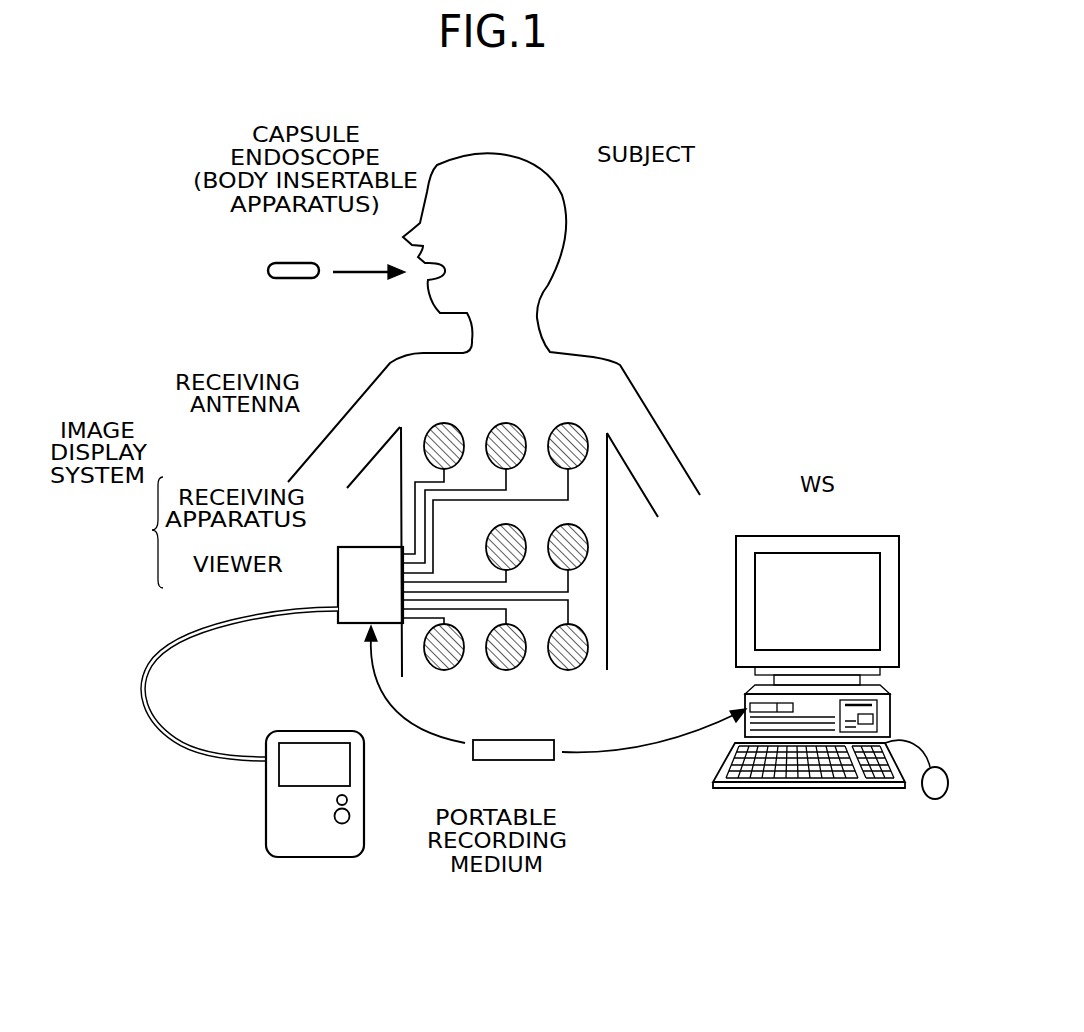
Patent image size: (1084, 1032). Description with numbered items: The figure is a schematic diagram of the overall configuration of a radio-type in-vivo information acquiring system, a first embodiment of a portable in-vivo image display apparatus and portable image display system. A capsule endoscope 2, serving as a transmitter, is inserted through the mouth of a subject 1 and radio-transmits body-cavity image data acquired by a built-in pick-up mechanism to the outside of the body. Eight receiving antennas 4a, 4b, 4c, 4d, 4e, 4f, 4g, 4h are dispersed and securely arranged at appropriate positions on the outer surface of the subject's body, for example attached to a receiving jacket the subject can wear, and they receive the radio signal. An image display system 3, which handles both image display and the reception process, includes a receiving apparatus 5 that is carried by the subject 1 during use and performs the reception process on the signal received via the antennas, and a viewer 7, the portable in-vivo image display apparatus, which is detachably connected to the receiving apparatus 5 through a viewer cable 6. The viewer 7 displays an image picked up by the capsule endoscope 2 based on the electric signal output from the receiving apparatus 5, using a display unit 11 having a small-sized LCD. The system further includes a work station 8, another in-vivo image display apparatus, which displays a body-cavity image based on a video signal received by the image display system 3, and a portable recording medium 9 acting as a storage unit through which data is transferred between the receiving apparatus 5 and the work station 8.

The subject 1 is at (558, 178).
The capsule endoscope 2 is at (298, 262).
The image display system 3 is at (150, 530).
The receiving antenna 4a is at (425, 433).
The receiving antenna 4b is at (510, 424).
The receiving antenna 4c is at (572, 424).
The receiving antenna 4d is at (514, 527).
The receiving antenna 4e is at (574, 527).
The receiving antenna 4f is at (444, 671).
The receiving antenna 4g is at (506, 671).
The receiving antenna 4h is at (568, 671).
The receiving apparatus 5 is at (338, 553).
The viewer cable 6 is at (141, 672).
The viewer 7 is at (307, 687).
The work station 8 is at (803, 536).
The portable recording medium 9 is at (507, 761).
The display unit 11 is at (327, 766).